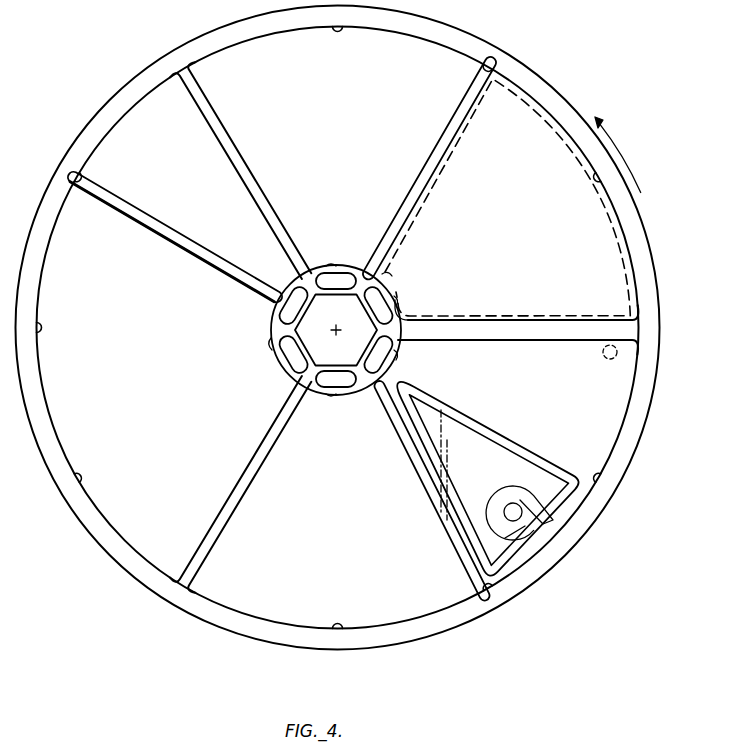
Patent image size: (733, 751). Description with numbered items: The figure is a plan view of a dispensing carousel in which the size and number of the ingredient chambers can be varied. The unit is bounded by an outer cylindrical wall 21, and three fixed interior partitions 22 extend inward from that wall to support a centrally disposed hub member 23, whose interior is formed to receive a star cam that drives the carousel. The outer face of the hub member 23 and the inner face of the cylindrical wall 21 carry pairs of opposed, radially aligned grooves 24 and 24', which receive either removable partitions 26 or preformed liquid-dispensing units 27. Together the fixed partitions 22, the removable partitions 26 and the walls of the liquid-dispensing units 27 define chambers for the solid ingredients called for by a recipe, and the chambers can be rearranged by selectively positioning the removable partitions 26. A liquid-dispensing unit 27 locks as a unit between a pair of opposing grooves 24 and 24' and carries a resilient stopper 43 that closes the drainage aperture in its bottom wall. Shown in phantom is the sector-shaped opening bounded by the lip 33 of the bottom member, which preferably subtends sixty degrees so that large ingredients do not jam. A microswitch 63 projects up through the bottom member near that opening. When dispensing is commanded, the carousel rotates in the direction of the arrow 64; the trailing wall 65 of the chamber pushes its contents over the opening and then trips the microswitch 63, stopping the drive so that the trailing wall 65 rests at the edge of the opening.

The outer cylindrical wall 21 is at (642, 438).
The fixed interior partition 22 is at (254, 167).
The hub member 23 is at (388, 278).
The groove 24 is at (327, 330).
The groove 24' is at (319, 329).
The removable partition 26 is at (180, 232).
The liquid-dispensing unit 27 is at (552, 445).
The lip 33 is at (452, 312).
The resilient stopper 43 is at (496, 500).
The microswitch 63 is at (603, 355).
The arrow 64 is at (622, 142).
The trailing wall 65 is at (472, 412).